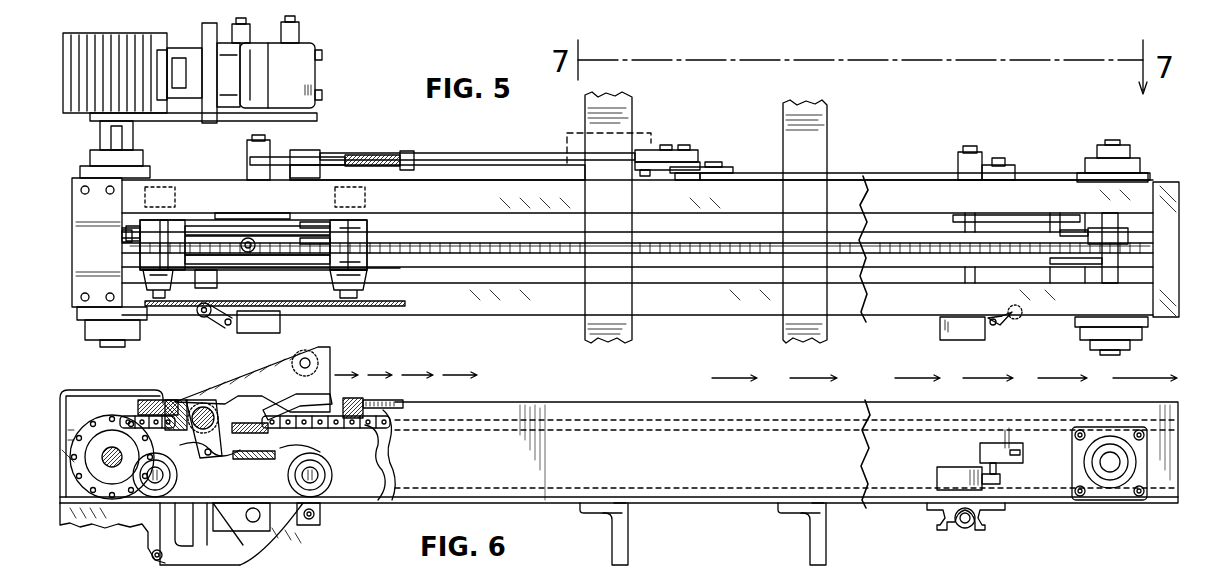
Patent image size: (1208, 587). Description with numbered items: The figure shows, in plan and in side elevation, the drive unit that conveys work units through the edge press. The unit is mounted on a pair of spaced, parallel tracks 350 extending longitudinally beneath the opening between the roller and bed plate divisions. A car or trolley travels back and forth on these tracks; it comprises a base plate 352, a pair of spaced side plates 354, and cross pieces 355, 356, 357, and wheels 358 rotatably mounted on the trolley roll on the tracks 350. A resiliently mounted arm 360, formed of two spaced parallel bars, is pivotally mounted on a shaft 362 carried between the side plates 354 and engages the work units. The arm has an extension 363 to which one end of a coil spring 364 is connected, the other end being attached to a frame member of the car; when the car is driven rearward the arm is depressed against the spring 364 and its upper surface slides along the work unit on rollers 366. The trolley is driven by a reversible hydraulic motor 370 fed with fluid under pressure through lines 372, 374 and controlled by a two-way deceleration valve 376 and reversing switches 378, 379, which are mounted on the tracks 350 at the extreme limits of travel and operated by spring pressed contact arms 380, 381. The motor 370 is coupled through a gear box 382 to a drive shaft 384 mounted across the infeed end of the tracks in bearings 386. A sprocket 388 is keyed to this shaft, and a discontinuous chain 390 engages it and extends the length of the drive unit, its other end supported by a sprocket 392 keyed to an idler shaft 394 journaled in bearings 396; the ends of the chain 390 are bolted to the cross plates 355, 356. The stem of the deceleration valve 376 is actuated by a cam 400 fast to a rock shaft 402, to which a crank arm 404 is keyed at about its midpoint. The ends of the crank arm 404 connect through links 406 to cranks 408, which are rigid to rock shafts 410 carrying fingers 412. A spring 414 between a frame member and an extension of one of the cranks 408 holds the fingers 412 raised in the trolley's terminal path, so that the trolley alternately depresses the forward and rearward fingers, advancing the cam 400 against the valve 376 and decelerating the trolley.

In FIG. 5, the tracks 350 is at (495, 305).
In FIG. 6, the tracks 350 is at (370, 503).
In FIG. 5, the base plate 352 is at (142, 264).
In FIG. 6, the base plate 352 is at (178, 399).
In FIG. 5, the side plates 354 is at (333, 222).
In FIG. 6, the side plates 354 is at (373, 442).
In FIG. 5, the cross piece 355 is at (184, 246).
In FIG. 6, the cross piece 355 is at (178, 407).
In FIG. 5, the cross piece 356 is at (263, 225).
In FIG. 6, the cross piece 356 is at (262, 408).
In FIG. 5, the cross piece 357 is at (372, 215).
In FIG. 6, the cross piece 357 is at (349, 399).
In FIG. 5, the wheels 358 is at (173, 197).
In FIG. 6, the wheels 358 is at (178, 475).
In FIG. 5, the arm 360 is at (320, 212).
In FIG. 6, the arm 360 is at (245, 381).
In FIG. 5, the shaft 362 is at (210, 286).
In FIG. 6, the shaft 362 is at (222, 400).
In FIG. 6, the extension 363 is at (225, 438).
In FIG. 6, the coil spring 364 is at (254, 469).
In FIG. 5, the rollers 366 is at (370, 224).
In FIG. 6, the rollers 366 is at (303, 360).
In FIG. 5, the reversible hydraulic motor 370 is at (300, 68).
In FIG. 6, the reversible hydraulic motor 370 is at (225, 540).
In FIG. 5, the line 372 is at (245, 30).
In FIG. 5, the line 374 is at (302, 30).
In FIG. 5, the two-way deceleration valve 376 is at (651, 133).
In FIG. 5, the reversing switch 378 is at (280, 325).
In FIG. 5, the reversing switch 379 is at (965, 338).
In FIG. 6, the reversing switch 379 is at (945, 478).
In FIG. 5, the spring pressed contact arm 380 is at (204, 316).
In FIG. 5, the spring pressed contact arm 381 is at (1019, 317).
In FIG. 6, the spring pressed contact arm 381 is at (1023, 453).
In FIG. 5, the gear box 382 is at (128, 44).
In FIG. 6, the gear box 382 is at (165, 535).
In FIG. 5, the drive shaft 384 is at (131, 136).
In FIG. 6, the drive shaft 384 is at (113, 445).
In FIG. 5, the bearings 386 is at (95, 160).
In FIG. 5, the sprocket 388 is at (128, 235).
In FIG. 6, the sprocket 388 is at (131, 420).
In FIG. 5, the discontinuous chain 390 is at (478, 243).
In FIG. 6, the discontinuous chain 390 is at (95, 420).
In FIG. 5, the sprocket 392 is at (1135, 234).
In FIG. 5, the idler shaft 394 is at (1108, 272).
In FIG. 6, the idler shaft 394 is at (1106, 466).
In FIG. 5, the bearings 396 is at (1138, 162).
In FIG. 6, the bearings 396 is at (1088, 492).
In FIG. 5, the cam 400 is at (698, 153).
In FIG. 5, the rock shaft 402 is at (686, 180).
In FIG. 5, the crank arm 404 is at (712, 168).
In FIG. 5, the links 406 is at (492, 165).
In FIG. 5, the cranks 408 is at (255, 162).
In FIG. 5, the rock shafts 410 is at (257, 140).
In FIG. 6, the rock shafts 410 is at (965, 529).
In FIG. 5, the fingers 412 is at (232, 214).
In FIG. 5, the spring 414 is at (375, 156).